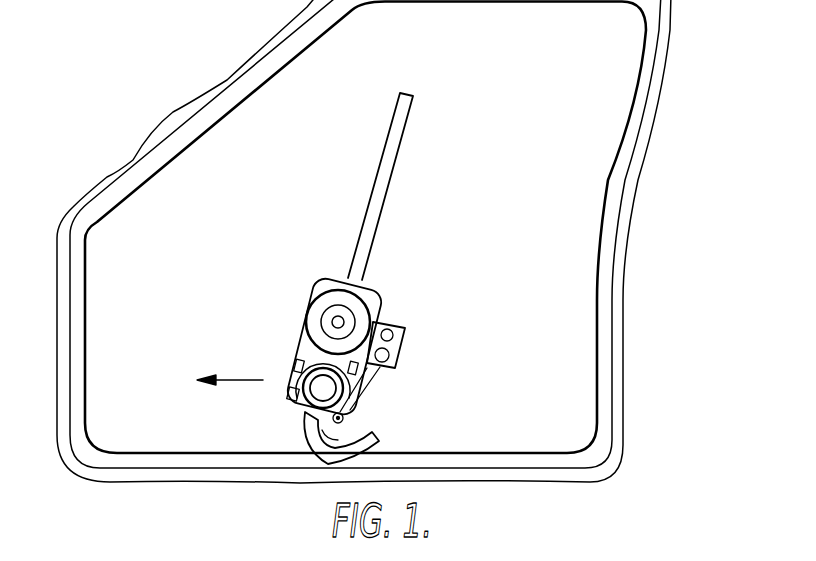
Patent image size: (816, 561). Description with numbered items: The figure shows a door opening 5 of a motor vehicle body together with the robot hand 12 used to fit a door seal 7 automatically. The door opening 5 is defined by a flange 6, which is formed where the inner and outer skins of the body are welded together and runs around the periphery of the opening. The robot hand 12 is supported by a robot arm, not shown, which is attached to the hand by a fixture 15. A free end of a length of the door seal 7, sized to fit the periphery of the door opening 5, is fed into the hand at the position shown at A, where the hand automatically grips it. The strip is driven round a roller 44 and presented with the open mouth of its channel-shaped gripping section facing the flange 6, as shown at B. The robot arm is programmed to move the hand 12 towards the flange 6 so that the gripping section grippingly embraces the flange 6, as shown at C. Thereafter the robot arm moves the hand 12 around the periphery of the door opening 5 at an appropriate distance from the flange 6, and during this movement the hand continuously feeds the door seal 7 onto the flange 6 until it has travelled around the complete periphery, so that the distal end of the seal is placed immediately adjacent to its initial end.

The door opening 5 is at (326, 131).
The flange 6 is at (638, 103).
The door seal 7 is at (380, 197).
The robot hand 12 is at (307, 305).
The fixture 15 is at (293, 403).
The roller 44 is at (326, 457).
The seal feed position A is at (337, 273).
The seal presentation position B is at (306, 433).
The seal engagement position C is at (368, 432).